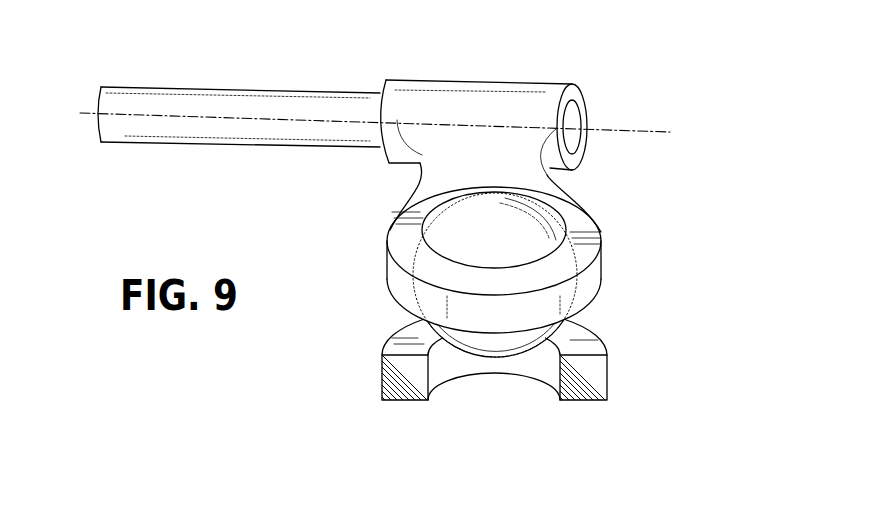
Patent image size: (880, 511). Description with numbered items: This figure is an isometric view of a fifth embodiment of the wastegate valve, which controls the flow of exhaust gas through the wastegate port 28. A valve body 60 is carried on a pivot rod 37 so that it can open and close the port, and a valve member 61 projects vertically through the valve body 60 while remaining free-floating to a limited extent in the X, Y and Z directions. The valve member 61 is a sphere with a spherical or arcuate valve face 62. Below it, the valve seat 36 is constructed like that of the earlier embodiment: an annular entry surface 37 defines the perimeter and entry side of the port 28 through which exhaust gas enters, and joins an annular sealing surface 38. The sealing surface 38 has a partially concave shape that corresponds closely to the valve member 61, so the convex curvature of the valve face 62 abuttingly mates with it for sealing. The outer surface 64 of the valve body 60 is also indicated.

The wastegate port 28 is at (473, 390).
The valve seat 36 is at (607, 373).
The annular entry surface 37 is at (339, 105).
The annular sealing surface 38 is at (562, 353).
The valve body 60 is at (573, 207).
The valve member 61 is at (470, 227).
The valve face 62 is at (500, 357).
The outer surface 64 is at (400, 285).